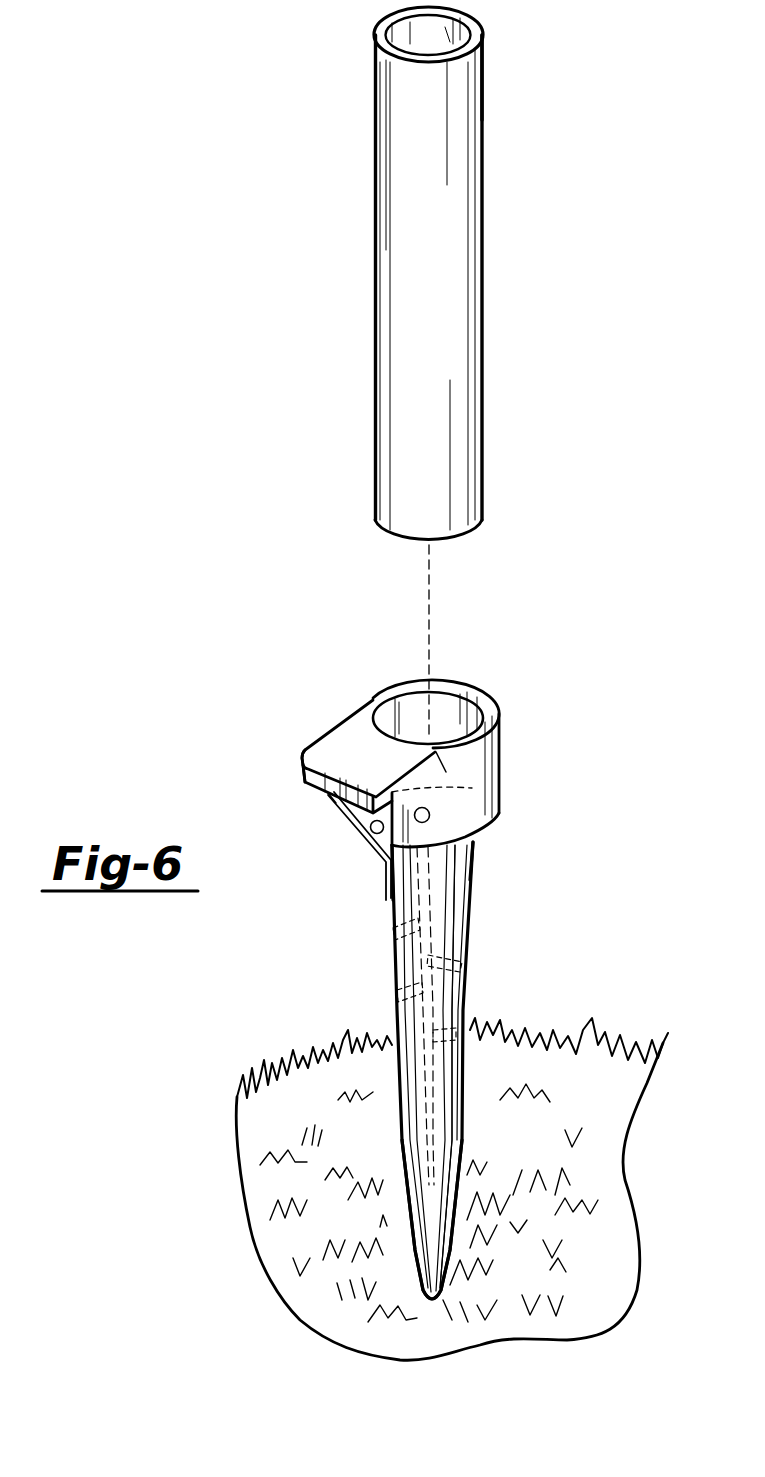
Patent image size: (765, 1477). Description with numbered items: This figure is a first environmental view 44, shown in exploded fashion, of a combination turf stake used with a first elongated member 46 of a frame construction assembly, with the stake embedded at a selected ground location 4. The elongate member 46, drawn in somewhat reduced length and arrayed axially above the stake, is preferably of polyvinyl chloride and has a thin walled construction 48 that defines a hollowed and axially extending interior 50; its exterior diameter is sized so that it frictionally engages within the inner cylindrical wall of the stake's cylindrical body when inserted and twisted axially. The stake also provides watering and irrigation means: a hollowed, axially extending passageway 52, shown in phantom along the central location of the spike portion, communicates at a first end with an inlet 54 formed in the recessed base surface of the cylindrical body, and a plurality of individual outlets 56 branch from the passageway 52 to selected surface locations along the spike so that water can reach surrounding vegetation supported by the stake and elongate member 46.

The selected ground location 4 is at (265, 1145).
The first environmental view 44 is at (298, 441).
The first elongated member 46 is at (395, 298).
The thin walled construction 48 is at (375, 22).
The hollowed and axially extending interior 50 is at (484, 18).
The axially extending passageway 52 is at (423, 894).
The inlet 54 is at (498, 810).
The outlets 56 is at (463, 983).